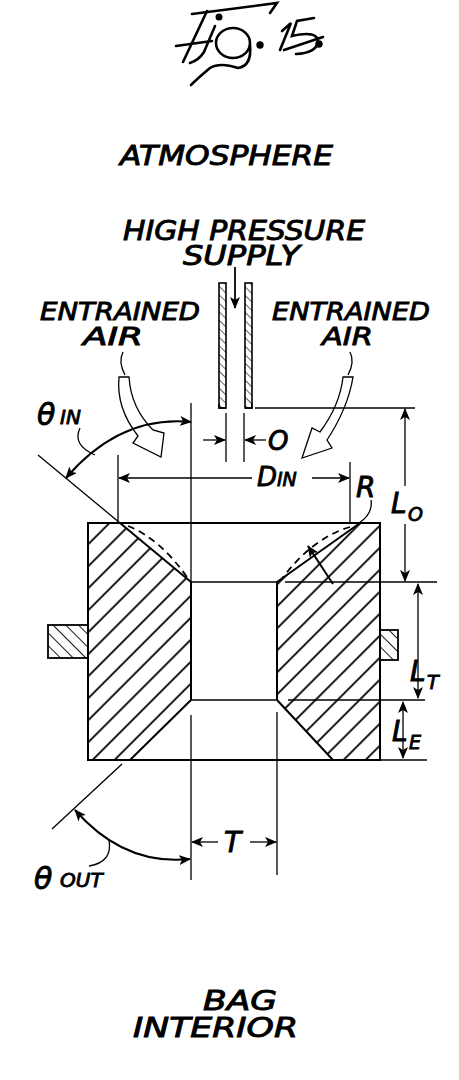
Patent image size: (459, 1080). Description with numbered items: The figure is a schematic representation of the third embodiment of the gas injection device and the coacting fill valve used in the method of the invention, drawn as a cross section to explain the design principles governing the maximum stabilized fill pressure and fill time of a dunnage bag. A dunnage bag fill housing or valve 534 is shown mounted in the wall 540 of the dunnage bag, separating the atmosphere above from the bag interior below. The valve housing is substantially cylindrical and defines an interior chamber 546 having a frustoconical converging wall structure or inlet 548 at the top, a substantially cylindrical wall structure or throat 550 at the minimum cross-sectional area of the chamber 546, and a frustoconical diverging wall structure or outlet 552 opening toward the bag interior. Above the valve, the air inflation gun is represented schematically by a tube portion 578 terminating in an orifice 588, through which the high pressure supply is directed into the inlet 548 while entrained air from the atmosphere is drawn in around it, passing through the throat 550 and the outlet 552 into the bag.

The tube portion 578 is at (252, 302).
The orifice 588 is at (240, 411).
The dunnage bag fill housing or valve 534 is at (70, 575).
The wall of a dunnage bag 540 is at (68, 627).
The interior chamber 546 is at (207, 541).
The frustoconical converging wall structure or inlet 548 is at (293, 556).
The substantially cylindrical wall structure or throat 550 is at (277, 616).
The frustoconical diverging wall structure or outlet 552 is at (313, 762).